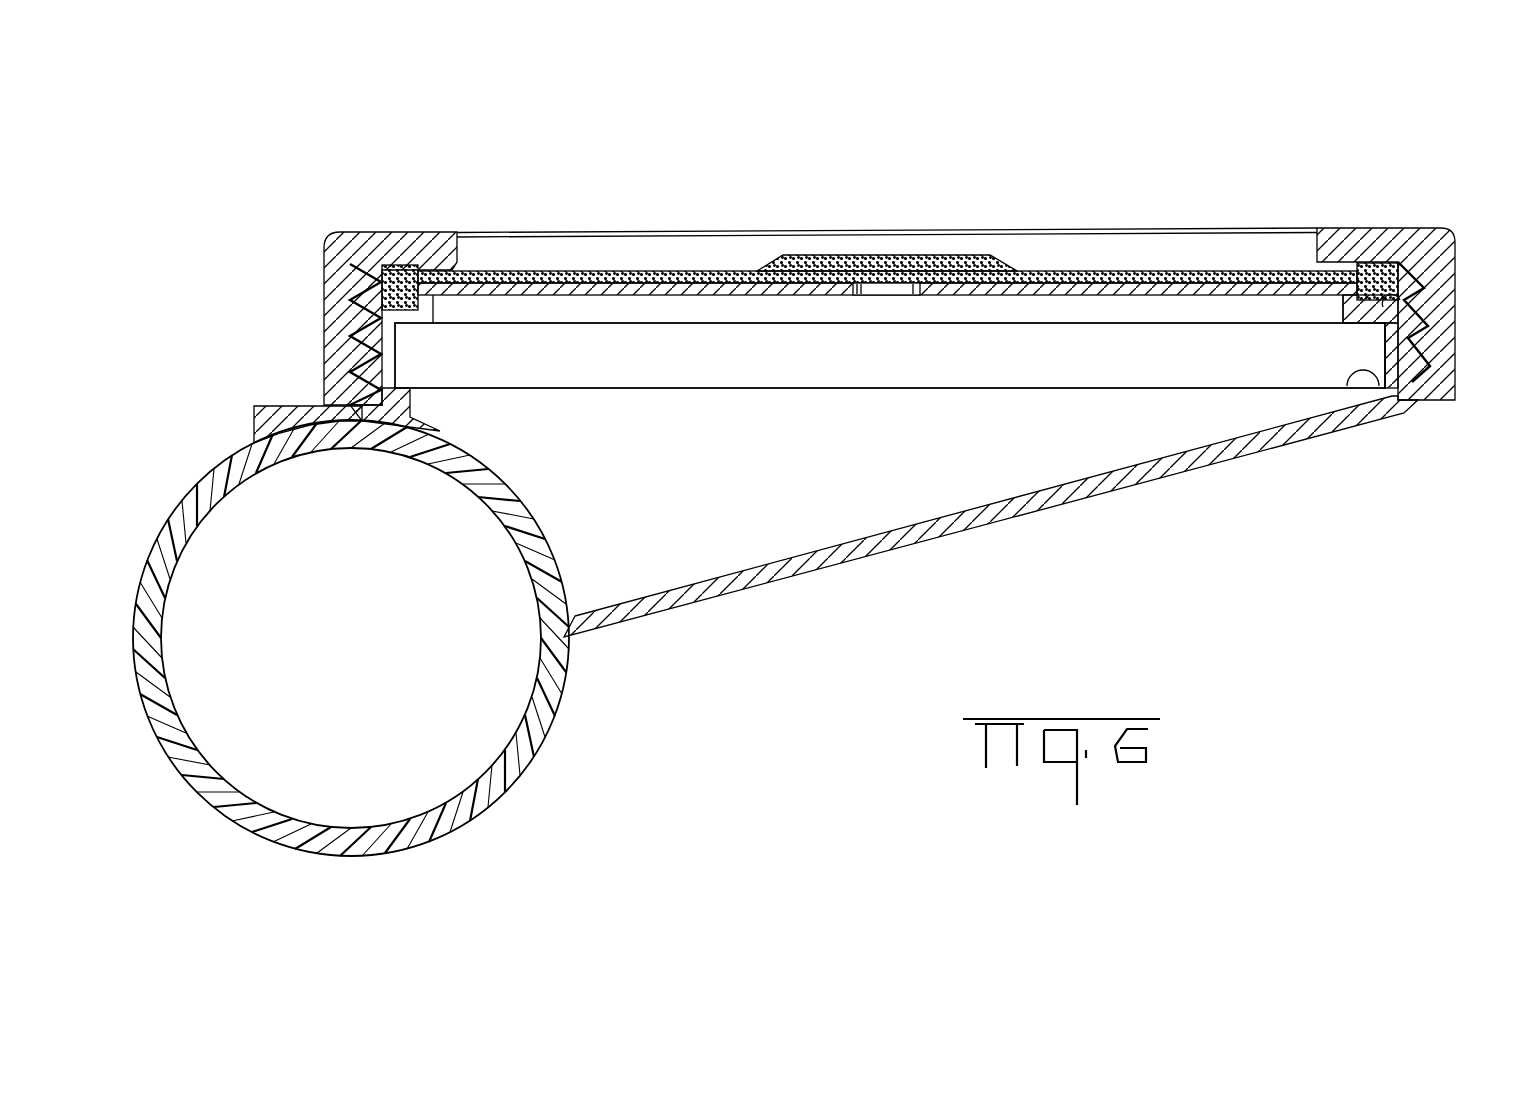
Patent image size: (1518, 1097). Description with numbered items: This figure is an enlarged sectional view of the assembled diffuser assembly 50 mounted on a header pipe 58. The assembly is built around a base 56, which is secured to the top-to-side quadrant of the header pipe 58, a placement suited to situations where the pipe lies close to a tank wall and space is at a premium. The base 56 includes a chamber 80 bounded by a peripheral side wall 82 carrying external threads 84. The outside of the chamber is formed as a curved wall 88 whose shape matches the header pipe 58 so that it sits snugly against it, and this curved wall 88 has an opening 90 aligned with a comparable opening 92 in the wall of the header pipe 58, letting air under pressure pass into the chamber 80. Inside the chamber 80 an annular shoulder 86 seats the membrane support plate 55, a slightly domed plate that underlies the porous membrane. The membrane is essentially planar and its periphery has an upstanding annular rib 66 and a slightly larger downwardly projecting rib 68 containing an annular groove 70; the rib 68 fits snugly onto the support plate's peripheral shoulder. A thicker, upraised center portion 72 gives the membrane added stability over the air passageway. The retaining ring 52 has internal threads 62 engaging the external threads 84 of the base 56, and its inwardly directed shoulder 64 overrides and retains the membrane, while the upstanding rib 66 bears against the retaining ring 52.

The diffuser assembly 50 is at (395, 226).
The retaining ring 52 is at (1420, 230).
The membrane support plate 55 is at (1136, 270).
The base 56 is at (910, 535).
The header pipe 58 is at (515, 790).
The internal threads 62 is at (1430, 258).
The inwardly directed shoulder 64 is at (1342, 232).
The upstanding annular rib 66 is at (1377, 262).
The downwardly projecting rib 68 is at (1345, 312).
The annular groove 70 is at (1408, 258).
The upraised center portion 72 is at (879, 255).
The chamber 80 is at (815, 455).
The peripheral side wall 82 is at (1440, 400).
The external threads 84 is at (1405, 290).
The annular shoulder 86 is at (1345, 390).
The curved wall 88 is at (545, 492).
The opening 90 is at (505, 495).
The opening 92 is at (500, 500).